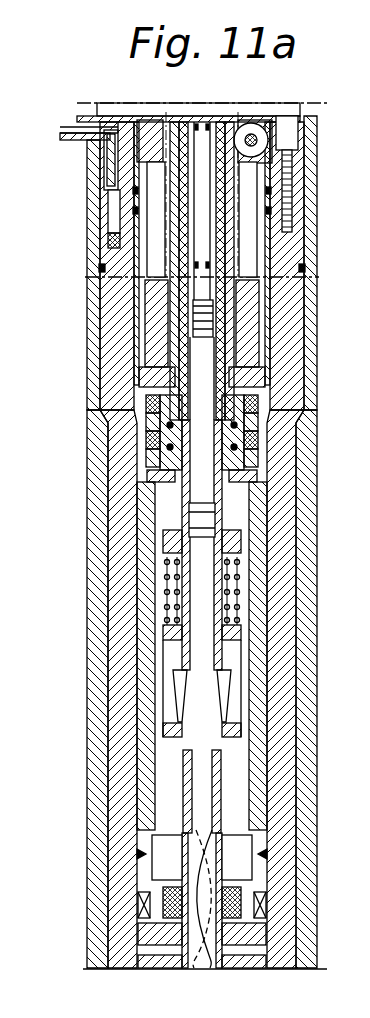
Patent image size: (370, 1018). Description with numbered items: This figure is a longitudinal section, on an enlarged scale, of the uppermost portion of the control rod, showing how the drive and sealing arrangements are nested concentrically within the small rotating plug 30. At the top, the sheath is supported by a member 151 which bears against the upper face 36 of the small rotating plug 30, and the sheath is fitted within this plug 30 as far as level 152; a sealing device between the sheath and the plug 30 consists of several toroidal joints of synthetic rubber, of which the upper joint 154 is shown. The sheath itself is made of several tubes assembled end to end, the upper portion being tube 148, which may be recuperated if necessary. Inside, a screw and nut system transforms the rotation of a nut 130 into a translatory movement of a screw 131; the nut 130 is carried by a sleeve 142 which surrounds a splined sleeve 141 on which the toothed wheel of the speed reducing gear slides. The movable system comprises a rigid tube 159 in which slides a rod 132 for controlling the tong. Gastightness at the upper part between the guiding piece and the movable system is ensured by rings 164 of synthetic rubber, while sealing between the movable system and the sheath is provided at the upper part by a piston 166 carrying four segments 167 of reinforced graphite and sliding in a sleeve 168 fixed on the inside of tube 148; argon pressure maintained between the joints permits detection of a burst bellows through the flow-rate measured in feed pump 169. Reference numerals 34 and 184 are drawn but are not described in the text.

The small rotating plug 30 is at (308, 160).
The lower housing 34 is at (297, 463).
The upper face 36 is at (305, 120).
The nut 130 is at (177, 673).
The screw 131 is at (214, 720).
The rod 132 is at (212, 918).
The splined sleeve 141 is at (212, 118).
The sleeve 142 is at (232, 117).
The tube 148 is at (118, 527).
The member 151 is at (102, 142).
The level 152 is at (98, 412).
The upper toroidal joint 154 is at (99, 268).
The rigid tube 159 is at (182, 963).
The rings 164 is at (150, 470).
The piston 166 is at (175, 383).
The segments 167 is at (146, 400).
The sleeve 168 is at (137, 335).
The feed pump 169 is at (92, 132).
The central rod 184 is at (200, 118).